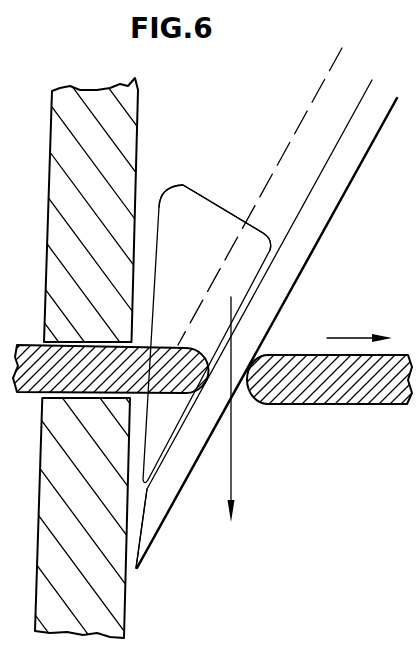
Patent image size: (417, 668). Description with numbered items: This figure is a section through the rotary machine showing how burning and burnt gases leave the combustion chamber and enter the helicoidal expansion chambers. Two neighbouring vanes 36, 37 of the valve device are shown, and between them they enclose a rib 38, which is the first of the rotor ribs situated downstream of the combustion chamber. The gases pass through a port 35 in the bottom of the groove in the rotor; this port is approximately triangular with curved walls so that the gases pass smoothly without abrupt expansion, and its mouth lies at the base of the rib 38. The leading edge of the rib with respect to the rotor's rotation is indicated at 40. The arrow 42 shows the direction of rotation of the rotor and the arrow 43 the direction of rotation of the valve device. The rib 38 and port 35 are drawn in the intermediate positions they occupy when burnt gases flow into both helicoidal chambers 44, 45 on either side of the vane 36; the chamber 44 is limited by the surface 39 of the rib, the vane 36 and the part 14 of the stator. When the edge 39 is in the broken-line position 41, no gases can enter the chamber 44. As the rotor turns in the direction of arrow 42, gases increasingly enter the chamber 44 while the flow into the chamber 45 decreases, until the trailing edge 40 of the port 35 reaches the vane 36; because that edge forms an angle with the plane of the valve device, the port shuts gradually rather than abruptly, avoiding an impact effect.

The part of the stator 14 is at (58, 122).
The port 35 is at (209, 227).
The vane 36 is at (32, 360).
The vane 37 is at (344, 395).
The rib 38 is at (336, 187).
The surface of the rib 39 is at (370, 77).
The leading edge of the rib 40 is at (237, 213).
The position of the rib edge 41 is at (303, 117).
The arrow indicating direction of rotation of the rotor 42 is at (234, 440).
The arrow indicating direction of rotation of the valve device 43 is at (349, 337).
The helicoidal chamber 44 is at (165, 430).
The helicoidal chamber 45 is at (177, 215).